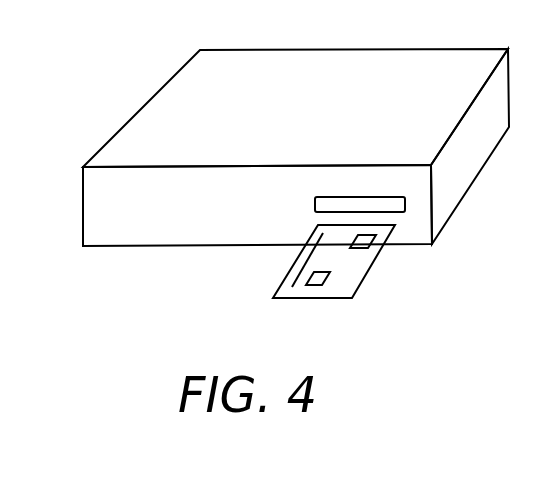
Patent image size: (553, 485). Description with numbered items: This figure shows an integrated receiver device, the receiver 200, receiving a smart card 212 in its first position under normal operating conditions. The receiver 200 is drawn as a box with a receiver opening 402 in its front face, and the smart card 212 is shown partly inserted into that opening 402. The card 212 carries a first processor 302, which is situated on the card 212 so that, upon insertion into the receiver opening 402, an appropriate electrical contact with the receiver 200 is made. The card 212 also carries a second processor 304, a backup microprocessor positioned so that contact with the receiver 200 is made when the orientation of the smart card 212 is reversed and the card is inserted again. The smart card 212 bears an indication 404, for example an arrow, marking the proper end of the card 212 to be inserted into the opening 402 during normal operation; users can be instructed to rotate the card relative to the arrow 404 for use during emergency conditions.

The receiver 200 is at (145, 102).
The receiver opening 402 is at (405, 205).
The smart card 212 is at (367, 272).
The indication 404 is at (294, 261).
The first processor 302 is at (375, 247).
The second processor 304 is at (317, 287).